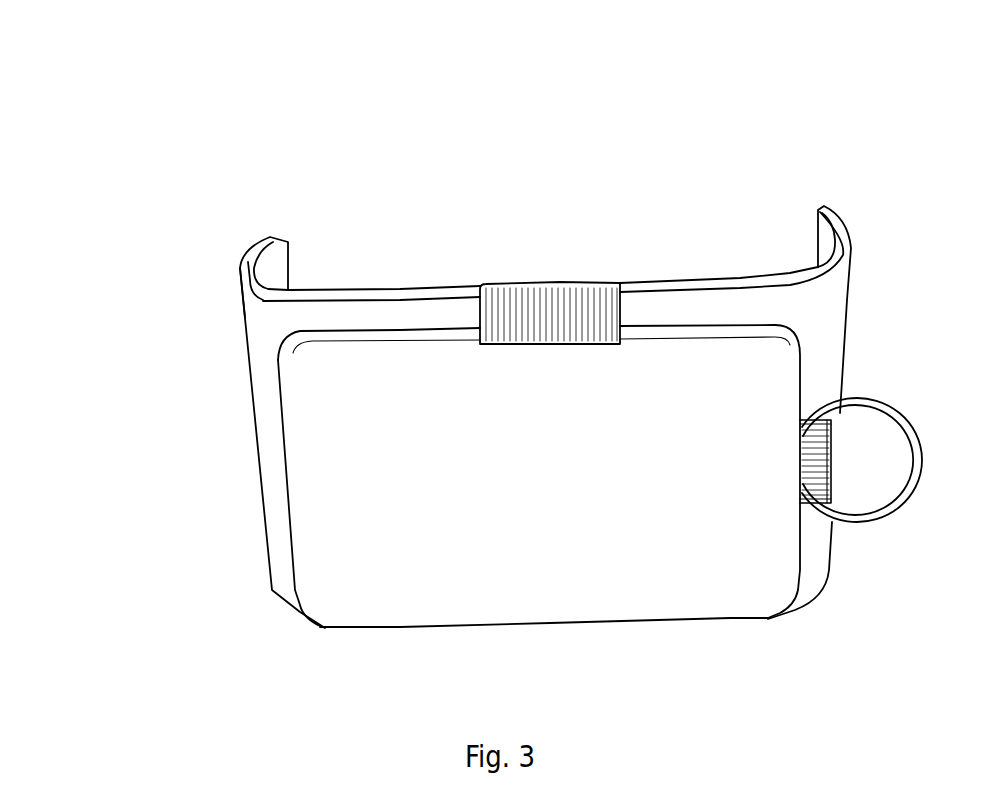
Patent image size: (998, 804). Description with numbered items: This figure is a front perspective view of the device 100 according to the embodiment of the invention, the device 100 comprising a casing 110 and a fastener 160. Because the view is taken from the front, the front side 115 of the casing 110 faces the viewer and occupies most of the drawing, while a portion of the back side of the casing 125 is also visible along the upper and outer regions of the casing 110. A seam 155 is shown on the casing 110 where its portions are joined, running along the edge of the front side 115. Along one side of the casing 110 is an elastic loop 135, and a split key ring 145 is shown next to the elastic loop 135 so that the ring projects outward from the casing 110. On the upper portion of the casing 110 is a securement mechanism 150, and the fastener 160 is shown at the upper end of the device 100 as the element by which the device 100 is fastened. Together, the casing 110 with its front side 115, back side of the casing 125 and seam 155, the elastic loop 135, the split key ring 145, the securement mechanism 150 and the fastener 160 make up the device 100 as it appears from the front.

The device 100 is at (622, 165).
The casing 110 is at (417, 527).
The front side of casing 115 is at (770, 622).
The back side of casing 125 is at (723, 325).
The elastic loop 135 is at (812, 503).
The split key ring 145 is at (905, 412).
The securement mechanism 150 is at (519, 283).
The seam 155 is at (325, 353).
The fastener 160 is at (858, 221).